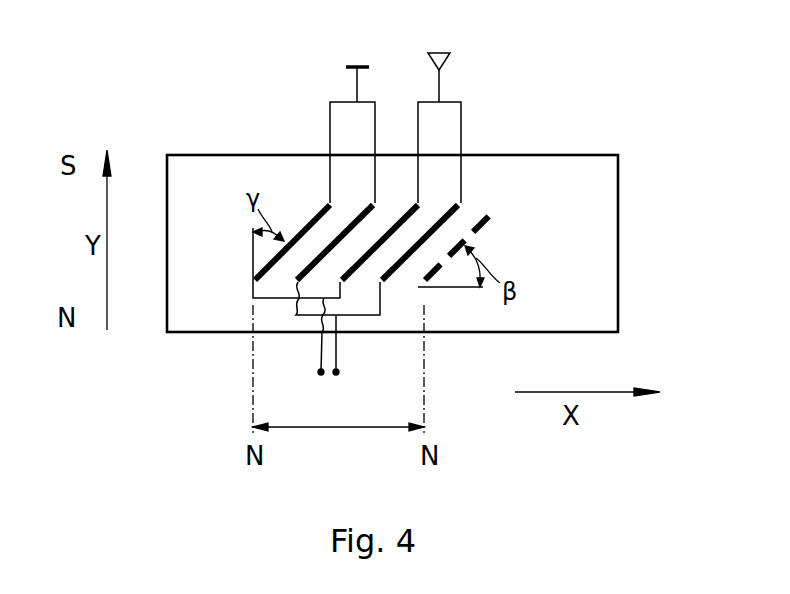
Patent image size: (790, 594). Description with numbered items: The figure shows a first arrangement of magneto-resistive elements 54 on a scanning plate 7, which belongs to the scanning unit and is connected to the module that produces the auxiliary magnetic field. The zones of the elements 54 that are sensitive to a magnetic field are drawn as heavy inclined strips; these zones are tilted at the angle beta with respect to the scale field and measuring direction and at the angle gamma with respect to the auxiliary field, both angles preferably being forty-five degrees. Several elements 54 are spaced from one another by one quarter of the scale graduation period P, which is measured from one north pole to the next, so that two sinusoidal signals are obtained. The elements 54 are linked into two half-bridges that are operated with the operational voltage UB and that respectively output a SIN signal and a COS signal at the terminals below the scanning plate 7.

The scanning plate 7 is at (565, 168).
The magneto-resistive elements 54 is at (360, 212).
The operational voltage UB is at (440, 52).
The SIN signal SIN is at (297, 344).
The COS signal COS is at (368, 353).
The scale graduation period P is at (338, 369).